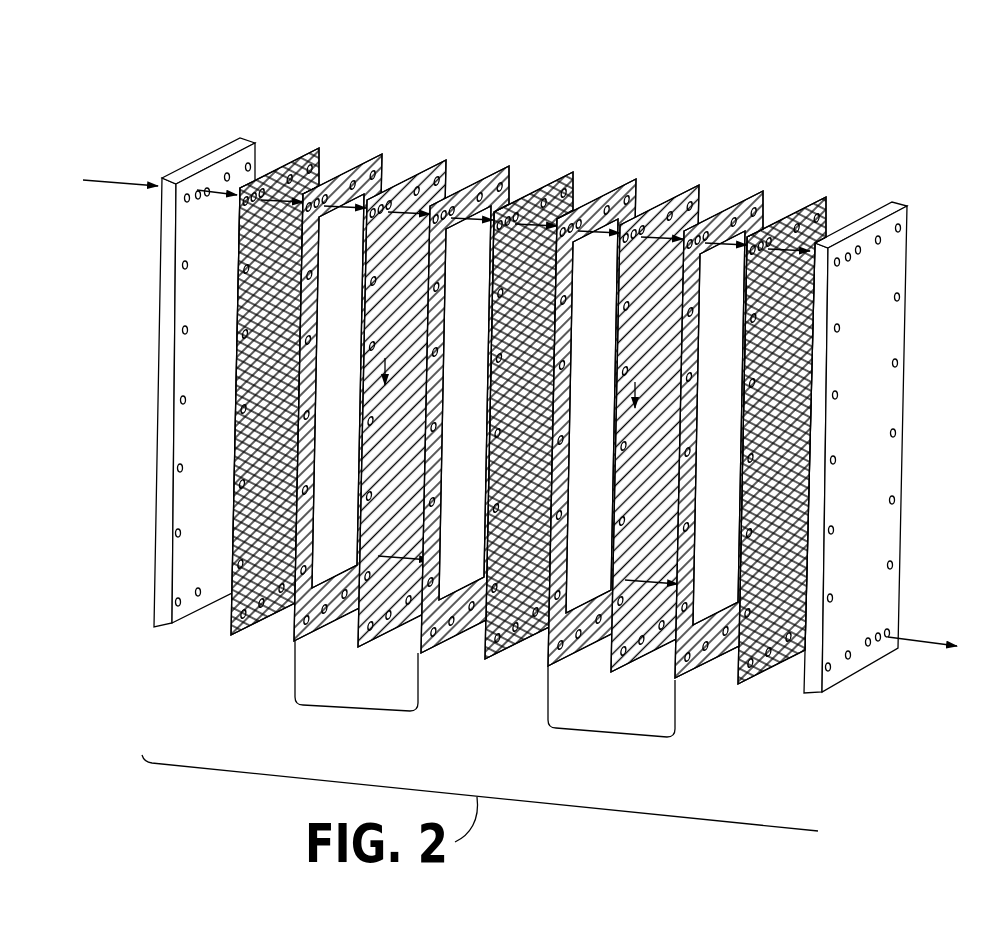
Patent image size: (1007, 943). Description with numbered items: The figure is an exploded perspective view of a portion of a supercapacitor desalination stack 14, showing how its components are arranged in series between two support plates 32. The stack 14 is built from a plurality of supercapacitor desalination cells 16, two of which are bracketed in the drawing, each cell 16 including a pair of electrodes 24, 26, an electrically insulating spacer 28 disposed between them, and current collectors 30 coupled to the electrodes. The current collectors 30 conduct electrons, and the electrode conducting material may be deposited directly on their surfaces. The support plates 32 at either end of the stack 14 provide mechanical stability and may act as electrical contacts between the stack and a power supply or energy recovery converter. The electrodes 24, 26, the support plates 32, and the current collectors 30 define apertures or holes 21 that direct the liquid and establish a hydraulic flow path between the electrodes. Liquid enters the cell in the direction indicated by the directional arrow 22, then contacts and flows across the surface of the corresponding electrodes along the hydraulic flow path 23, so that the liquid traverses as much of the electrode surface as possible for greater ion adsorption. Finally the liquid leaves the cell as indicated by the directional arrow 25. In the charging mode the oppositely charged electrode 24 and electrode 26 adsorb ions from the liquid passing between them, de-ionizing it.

The supercapacitor desalination stack 14 is at (872, 122).
The supercapacitor desalination cell 16 is at (350, 705).
The holes 21 is at (200, 187).
The directional arrow 22 is at (127, 180).
The hydraulic flow path 23 is at (380, 442).
The electrode 24 is at (363, 157).
The directional arrow 25 is at (907, 637).
The electrode 26 is at (500, 167).
The separator plate 28 is at (440, 162).
The current collector 30 is at (300, 147).
The support plate 32 is at (157, 378).